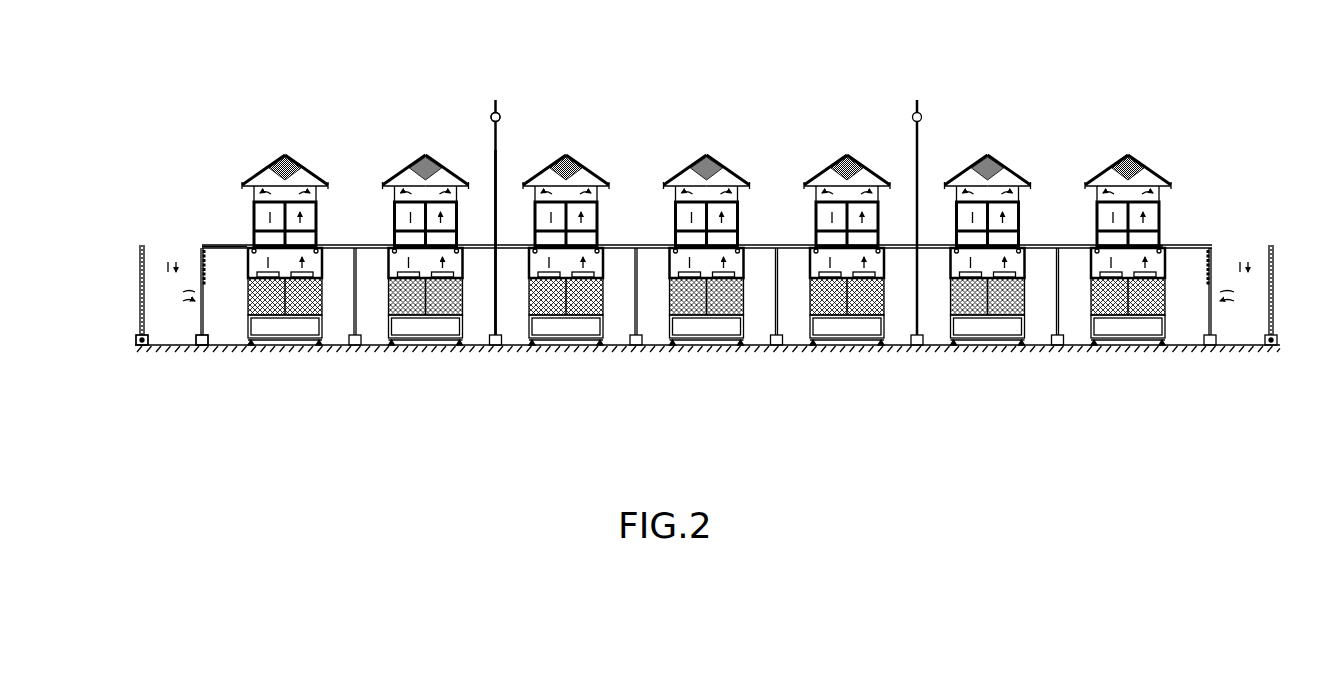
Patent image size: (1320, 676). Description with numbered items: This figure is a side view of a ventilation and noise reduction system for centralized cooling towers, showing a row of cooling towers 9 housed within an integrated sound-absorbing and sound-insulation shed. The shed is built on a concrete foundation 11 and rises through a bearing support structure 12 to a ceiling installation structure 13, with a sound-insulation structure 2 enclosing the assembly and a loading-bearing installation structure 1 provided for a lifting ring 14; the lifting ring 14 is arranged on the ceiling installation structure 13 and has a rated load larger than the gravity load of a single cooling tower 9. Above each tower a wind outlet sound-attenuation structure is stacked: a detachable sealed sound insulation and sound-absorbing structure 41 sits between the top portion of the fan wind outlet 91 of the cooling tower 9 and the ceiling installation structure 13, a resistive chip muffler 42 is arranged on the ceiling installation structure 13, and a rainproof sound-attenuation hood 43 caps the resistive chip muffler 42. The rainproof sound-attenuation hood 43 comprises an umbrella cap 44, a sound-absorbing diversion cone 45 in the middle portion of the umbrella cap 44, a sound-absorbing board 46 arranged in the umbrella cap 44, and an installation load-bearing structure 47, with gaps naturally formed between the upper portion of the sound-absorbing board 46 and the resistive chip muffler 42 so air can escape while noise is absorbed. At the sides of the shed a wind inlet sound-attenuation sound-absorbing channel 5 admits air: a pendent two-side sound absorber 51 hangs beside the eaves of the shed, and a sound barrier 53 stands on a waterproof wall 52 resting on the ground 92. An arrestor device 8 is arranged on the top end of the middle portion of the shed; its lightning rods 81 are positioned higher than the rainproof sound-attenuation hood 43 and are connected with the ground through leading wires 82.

The loading-bearing installation structure 1 is at (1058, 246).
The sound-insulation structure 2 is at (241, 244).
The wind inlet sound-attenuation sound-absorbing channel 5 is at (173, 263).
The arrestor device 8 is at (496, 143).
The cooling tower 9 is at (440, 342).
The concrete foundation 11 is at (202, 340).
The bearing support structure 12 is at (202, 306).
The ceiling installation structure 13 is at (223, 248).
The lifting ring 14 is at (1195, 213).
The detachable sealed sound insulation and sound-absorbing structure 41 is at (309, 278).
The resistive chip muffler 42 is at (312, 215).
The rainproof sound-attenuation hood 43 is at (306, 160).
The umbrella cap 44 is at (733, 152).
The sound-absorbing diversion cone 45 is at (703, 148).
The sound-absorbing board 46 is at (676, 152).
The installation load-bearing structure 47 is at (732, 158).
The pendent two-side sound absorber 51 is at (200, 262).
The waterproof wall 52 is at (143, 340).
The sound barrier 53 is at (142, 307).
The lightning rod 81 is at (496, 117).
The leading wire 82 is at (496, 168).
The fan wind outlet 91 is at (464, 339).
The ground 92 is at (333, 343).